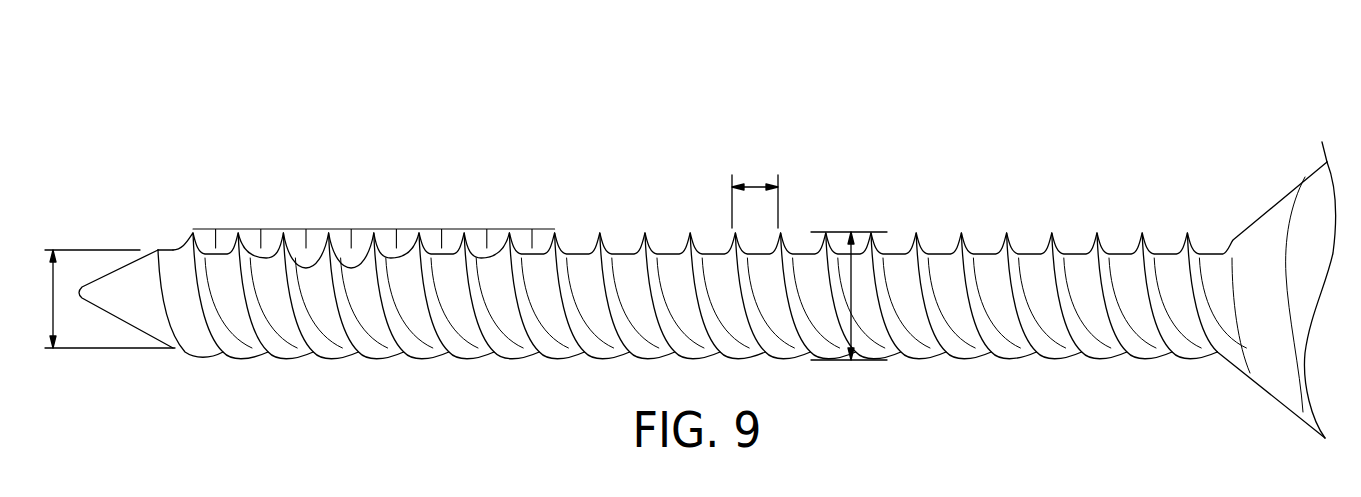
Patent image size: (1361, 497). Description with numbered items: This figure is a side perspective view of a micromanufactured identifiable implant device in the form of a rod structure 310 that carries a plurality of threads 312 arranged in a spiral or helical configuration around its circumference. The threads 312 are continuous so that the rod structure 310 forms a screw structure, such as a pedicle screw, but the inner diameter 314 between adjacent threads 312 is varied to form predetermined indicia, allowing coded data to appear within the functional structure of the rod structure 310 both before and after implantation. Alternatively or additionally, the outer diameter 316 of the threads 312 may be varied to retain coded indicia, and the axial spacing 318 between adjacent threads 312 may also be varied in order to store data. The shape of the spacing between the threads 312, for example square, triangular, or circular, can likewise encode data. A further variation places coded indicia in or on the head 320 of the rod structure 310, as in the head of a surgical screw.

The rod structure 310 is at (660, 205).
The threads 312 is at (417, 230).
The inner diameter 314 is at (50, 250).
The outer diameter 316 is at (851, 233).
The axial spacing 318 is at (753, 187).
The head 320 is at (1283, 202).